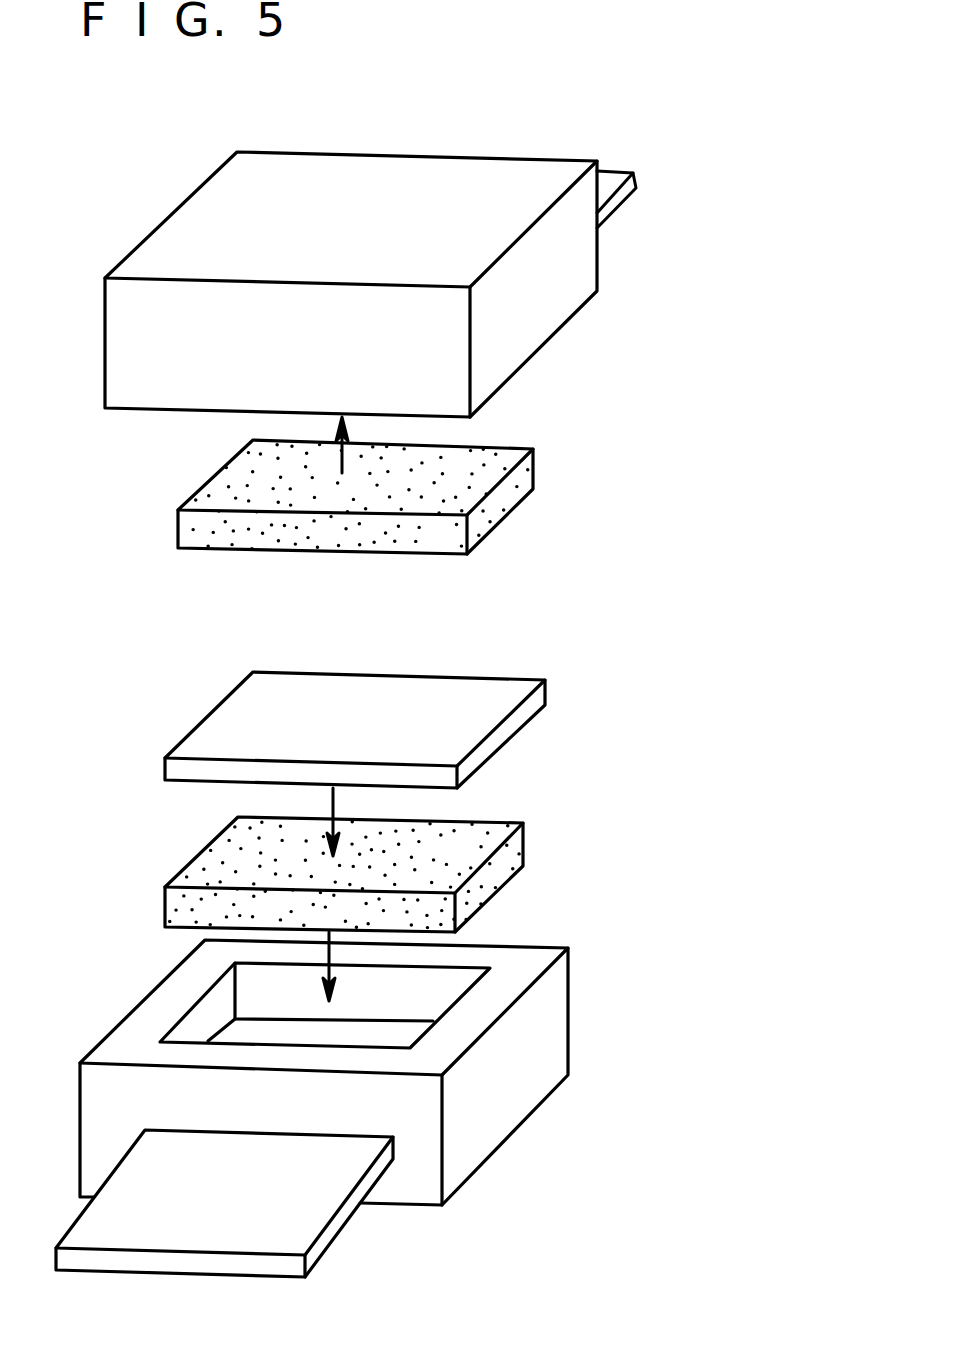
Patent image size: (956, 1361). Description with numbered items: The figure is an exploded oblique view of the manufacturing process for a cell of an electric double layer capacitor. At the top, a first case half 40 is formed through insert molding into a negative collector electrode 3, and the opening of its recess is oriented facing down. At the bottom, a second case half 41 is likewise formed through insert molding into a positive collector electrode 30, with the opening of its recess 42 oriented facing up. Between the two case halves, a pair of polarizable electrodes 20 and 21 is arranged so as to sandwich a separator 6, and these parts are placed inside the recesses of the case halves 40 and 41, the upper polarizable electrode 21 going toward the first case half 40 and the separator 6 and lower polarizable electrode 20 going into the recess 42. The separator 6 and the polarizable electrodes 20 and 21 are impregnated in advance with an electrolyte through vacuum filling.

The first case half 40 is at (435, 192).
The negative collector electrode 3 is at (617, 207).
The polarizable electrode 21 is at (500, 507).
The separator 6 is at (510, 732).
The polarizable electrode 20 is at (495, 878).
The second case half 41 is at (472, 1110).
The recess 42 is at (438, 992).
The positive collector electrode 30 is at (330, 1235).